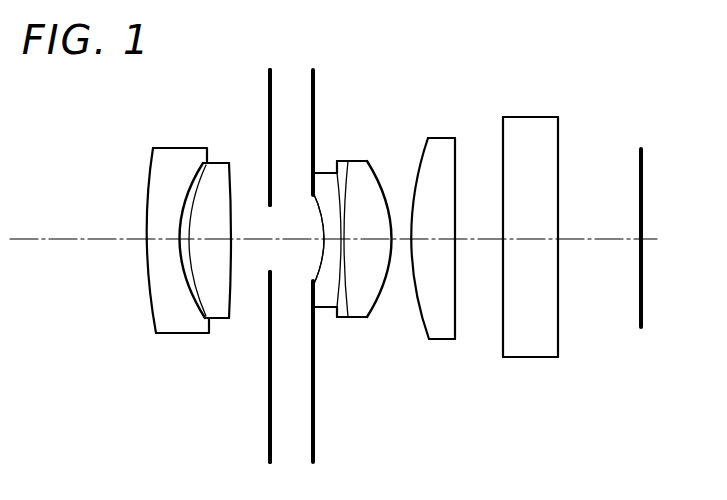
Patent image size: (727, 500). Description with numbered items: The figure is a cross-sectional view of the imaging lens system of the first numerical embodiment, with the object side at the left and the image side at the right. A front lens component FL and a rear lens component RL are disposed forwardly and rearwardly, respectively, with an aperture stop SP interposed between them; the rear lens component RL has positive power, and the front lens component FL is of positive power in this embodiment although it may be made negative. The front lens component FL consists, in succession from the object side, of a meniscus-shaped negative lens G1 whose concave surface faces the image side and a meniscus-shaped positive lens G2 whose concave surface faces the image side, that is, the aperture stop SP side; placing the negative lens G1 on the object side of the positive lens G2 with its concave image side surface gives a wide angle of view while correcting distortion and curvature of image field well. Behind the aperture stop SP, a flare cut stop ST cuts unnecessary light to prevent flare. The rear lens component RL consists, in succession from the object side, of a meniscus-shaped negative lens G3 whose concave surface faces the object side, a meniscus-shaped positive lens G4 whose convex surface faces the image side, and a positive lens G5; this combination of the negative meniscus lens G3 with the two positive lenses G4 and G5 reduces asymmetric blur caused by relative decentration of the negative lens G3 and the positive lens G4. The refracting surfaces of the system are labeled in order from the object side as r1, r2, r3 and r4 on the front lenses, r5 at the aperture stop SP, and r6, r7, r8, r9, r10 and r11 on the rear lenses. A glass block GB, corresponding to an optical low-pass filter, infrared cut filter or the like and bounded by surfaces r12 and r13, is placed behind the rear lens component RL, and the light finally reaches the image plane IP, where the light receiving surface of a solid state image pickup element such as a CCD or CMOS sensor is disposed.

The first lens surface r1 is at (145, 160).
The second lens surface r2 is at (197, 173).
The third lens surface r3 is at (208, 172).
The fourth lens surface r4 is at (229, 171).
The aperture stop surface r5 is at (259, 202).
The sixth lens surface r6 is at (310, 148).
The seventh lens surface r7 is at (326, 175).
The eighth lens surface r8 is at (354, 162).
The ninth lens surface r9 is at (380, 171).
The tenth lens surface r10 is at (417, 150).
The eleventh lens surface r11 is at (456, 151).
The glass block front surface r12 is at (503, 140).
The glass block rear surface r13 is at (558, 137).
The negative lens G1 is at (170, 335).
The positive lens G2 is at (219, 312).
The negative lens G3 is at (327, 310).
The positive lens G4 is at (356, 324).
The positive lens G5 is at (439, 340).
The glass block GB is at (528, 350).
The aperture stop SP is at (272, 80).
The flare cut stop ST is at (313, 84).
The image plane IP is at (640, 149).
The front lens component FL is at (123, 419).
The rear lens component RL is at (317, 419).